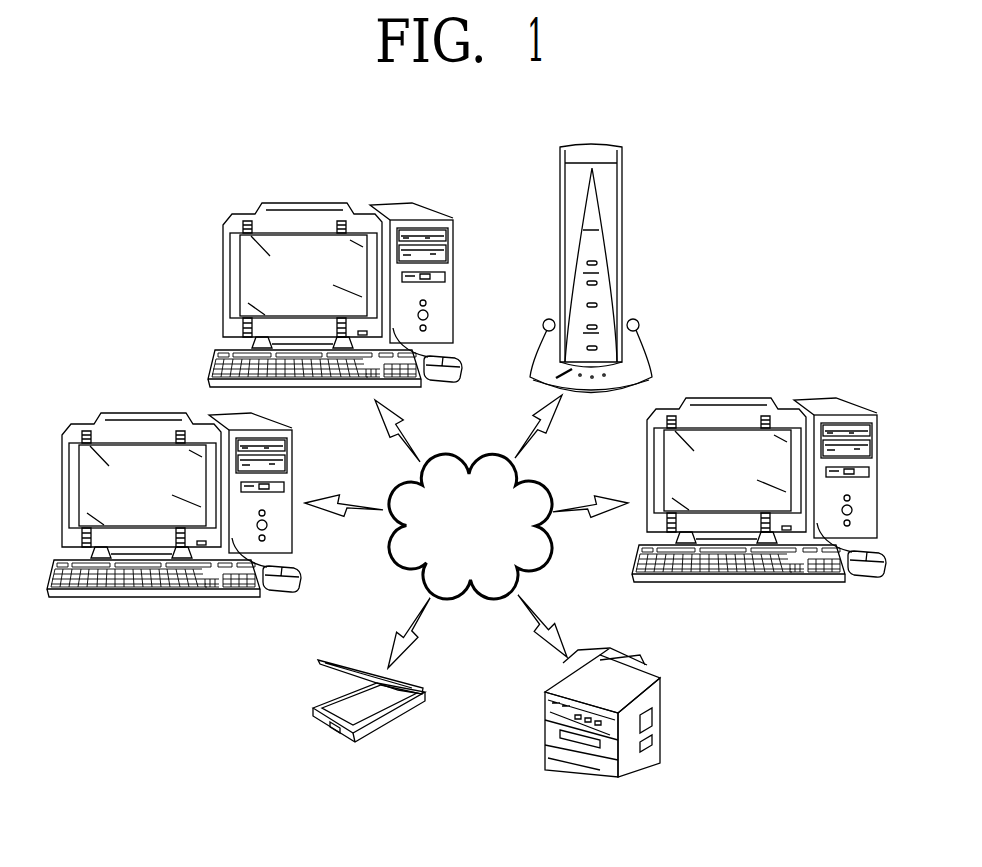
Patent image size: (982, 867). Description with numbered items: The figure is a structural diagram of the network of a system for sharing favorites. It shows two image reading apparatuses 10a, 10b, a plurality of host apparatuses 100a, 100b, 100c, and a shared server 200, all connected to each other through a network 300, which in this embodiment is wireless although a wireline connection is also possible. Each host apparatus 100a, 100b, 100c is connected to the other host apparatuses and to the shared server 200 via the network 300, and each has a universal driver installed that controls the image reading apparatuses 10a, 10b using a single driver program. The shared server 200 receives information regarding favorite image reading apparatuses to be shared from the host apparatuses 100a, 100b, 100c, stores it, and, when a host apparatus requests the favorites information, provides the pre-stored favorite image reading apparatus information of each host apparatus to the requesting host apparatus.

The host apparatus 100a is at (302, 203).
The host apparatus 100b is at (122, 412).
The host apparatus 100c is at (748, 397).
The shared server 200 is at (622, 252).
The network 300 is at (490, 455).
The image reading apparatus 10a is at (392, 722).
The image reading apparatus 10b is at (660, 712).